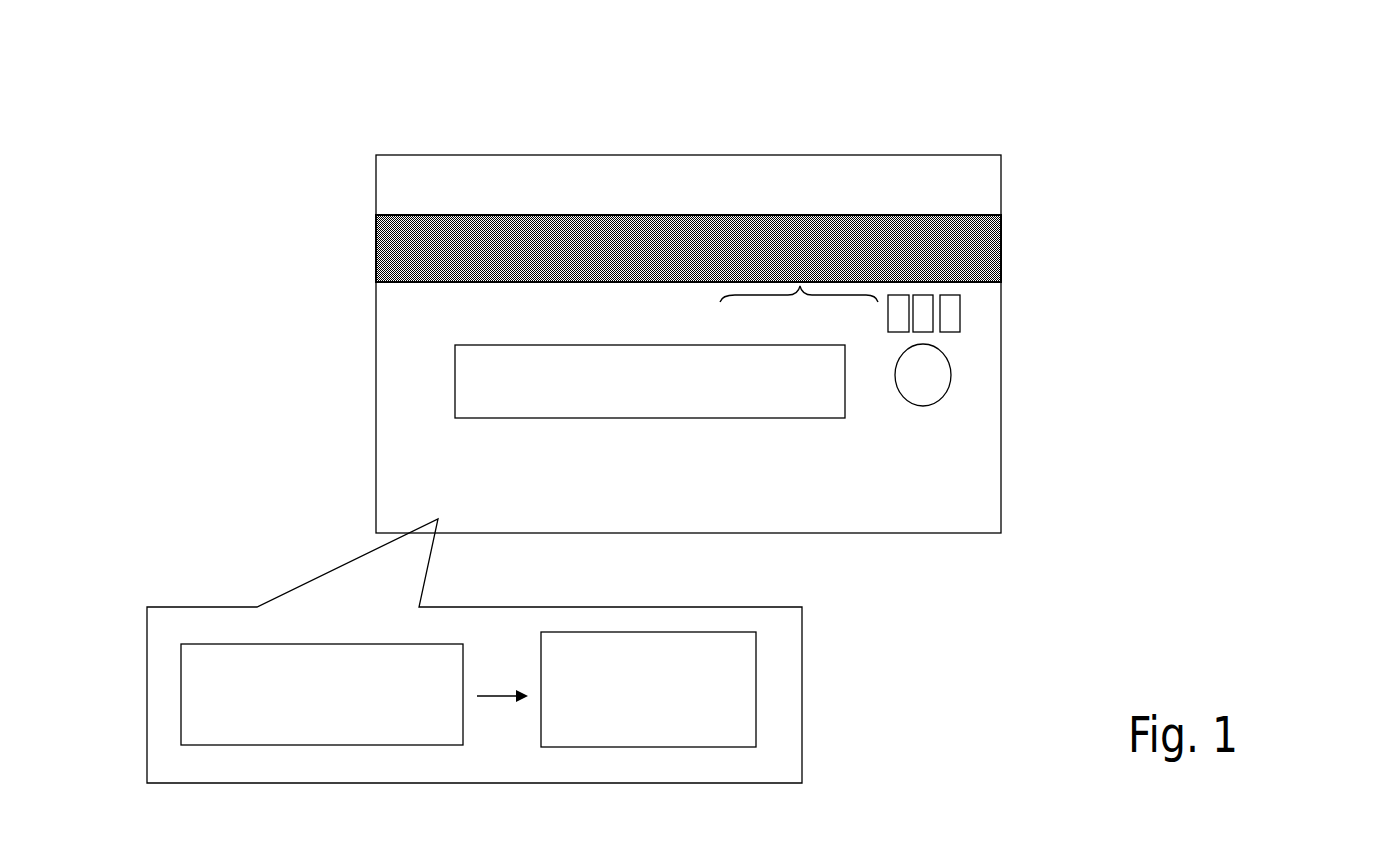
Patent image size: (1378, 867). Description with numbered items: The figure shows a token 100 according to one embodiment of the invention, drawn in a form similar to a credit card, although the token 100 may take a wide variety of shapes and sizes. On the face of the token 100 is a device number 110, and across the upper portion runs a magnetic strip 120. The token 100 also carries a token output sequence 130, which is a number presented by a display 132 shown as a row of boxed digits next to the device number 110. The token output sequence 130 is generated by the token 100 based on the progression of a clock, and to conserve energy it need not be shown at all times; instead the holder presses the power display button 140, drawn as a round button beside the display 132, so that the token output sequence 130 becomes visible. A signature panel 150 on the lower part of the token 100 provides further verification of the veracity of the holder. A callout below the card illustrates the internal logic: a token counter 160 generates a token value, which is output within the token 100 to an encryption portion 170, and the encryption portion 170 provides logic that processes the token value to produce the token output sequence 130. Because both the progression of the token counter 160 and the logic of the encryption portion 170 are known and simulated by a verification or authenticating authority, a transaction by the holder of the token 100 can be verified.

The token 100 is at (433, 146).
The device number 110 is at (800, 292).
The magnetic strip 120 is at (988, 234).
The token output sequence 130 is at (955, 334).
The display 132 is at (978, 313).
The power display button 140 is at (932, 393).
The signature panel 150 is at (827, 402).
The token counter 160 is at (322, 694).
The encryption portion 170 is at (648, 689).